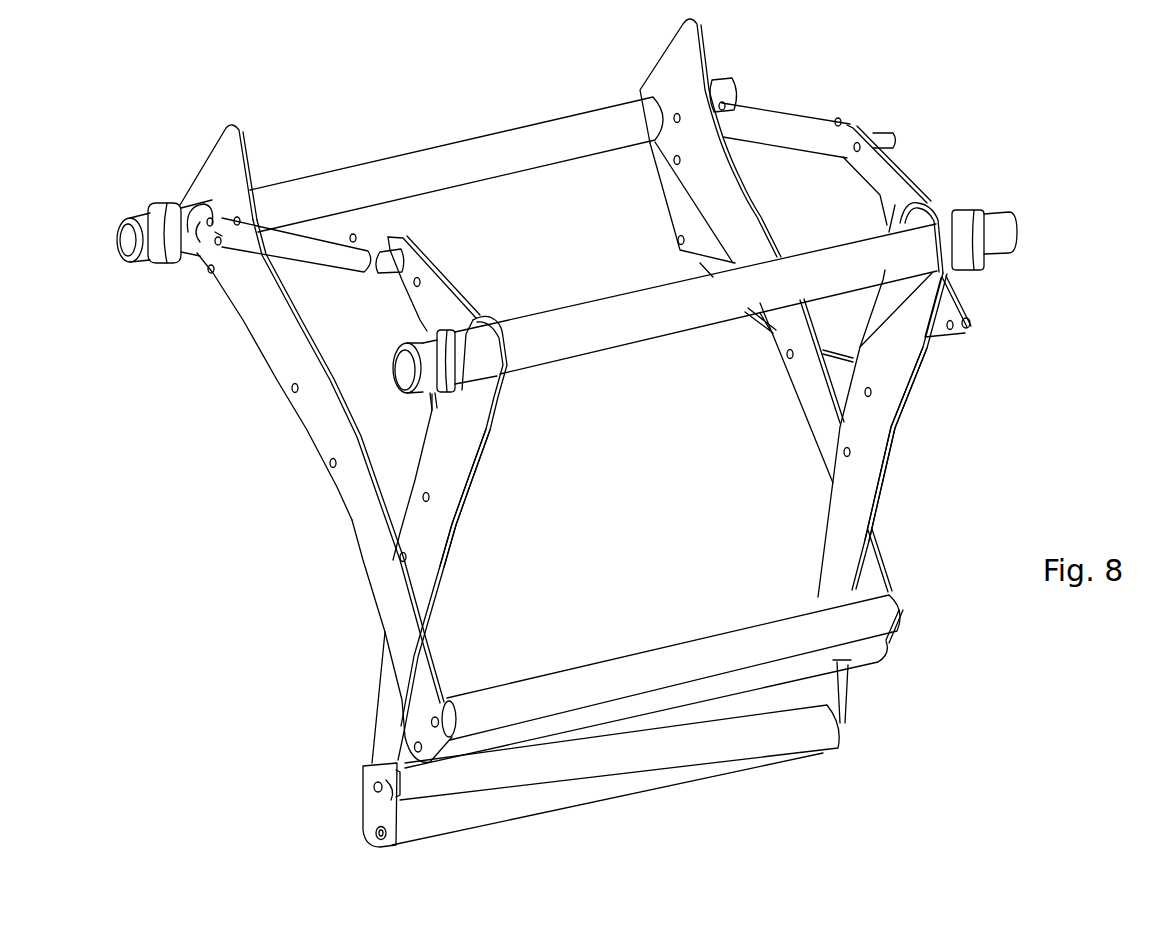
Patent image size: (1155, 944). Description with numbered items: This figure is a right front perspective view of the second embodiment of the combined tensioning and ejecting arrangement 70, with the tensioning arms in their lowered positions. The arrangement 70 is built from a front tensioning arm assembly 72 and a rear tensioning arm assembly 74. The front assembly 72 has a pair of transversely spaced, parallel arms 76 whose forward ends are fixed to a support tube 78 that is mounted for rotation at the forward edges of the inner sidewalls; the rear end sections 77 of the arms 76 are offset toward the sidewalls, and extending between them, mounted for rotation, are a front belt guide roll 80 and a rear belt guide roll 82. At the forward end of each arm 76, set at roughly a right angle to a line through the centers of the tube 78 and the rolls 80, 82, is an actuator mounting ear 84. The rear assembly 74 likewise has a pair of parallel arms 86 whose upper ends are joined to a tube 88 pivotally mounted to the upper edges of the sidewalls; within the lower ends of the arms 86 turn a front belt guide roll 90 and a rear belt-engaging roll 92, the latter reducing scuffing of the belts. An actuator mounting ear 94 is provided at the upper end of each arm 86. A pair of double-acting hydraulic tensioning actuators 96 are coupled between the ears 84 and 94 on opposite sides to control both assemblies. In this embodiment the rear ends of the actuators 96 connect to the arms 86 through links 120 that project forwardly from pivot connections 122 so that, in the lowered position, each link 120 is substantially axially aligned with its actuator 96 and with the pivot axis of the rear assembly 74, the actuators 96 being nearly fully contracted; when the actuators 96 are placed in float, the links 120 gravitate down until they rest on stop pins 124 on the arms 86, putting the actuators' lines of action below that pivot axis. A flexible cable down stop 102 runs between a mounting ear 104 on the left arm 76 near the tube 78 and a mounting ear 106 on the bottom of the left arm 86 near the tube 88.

The combined tensioning and ejecting arrangement 70 is at (290, 492).
The front tensioning arm assembly 72 is at (461, 537).
The rear tensioning arm assembly 74 is at (331, 378).
The arms 76 is at (463, 458).
The rear end sections 77 is at (367, 806).
The support tube 78 is at (623, 330).
The front belt guide roll 80 is at (747, 713).
The rear belt guide roll 82 is at (677, 767).
The actuator mounting ear 84 is at (420, 263).
The arms 86 is at (257, 317).
The tube 88 is at (463, 150).
The front belt guide roll 90 is at (678, 657).
The rear belt-engaging roll 92 is at (867, 658).
The actuator mounting ear 94 is at (222, 128).
The hydraulic tensioning actuator 96 is at (275, 230).
The down stop 102 is at (753, 323).
The mounting ear 104 is at (952, 308).
The mounting ear 106 is at (677, 218).
The link 120 is at (181, 203).
The pivot connection 122 is at (177, 200).
The stop pin 124 is at (208, 273).